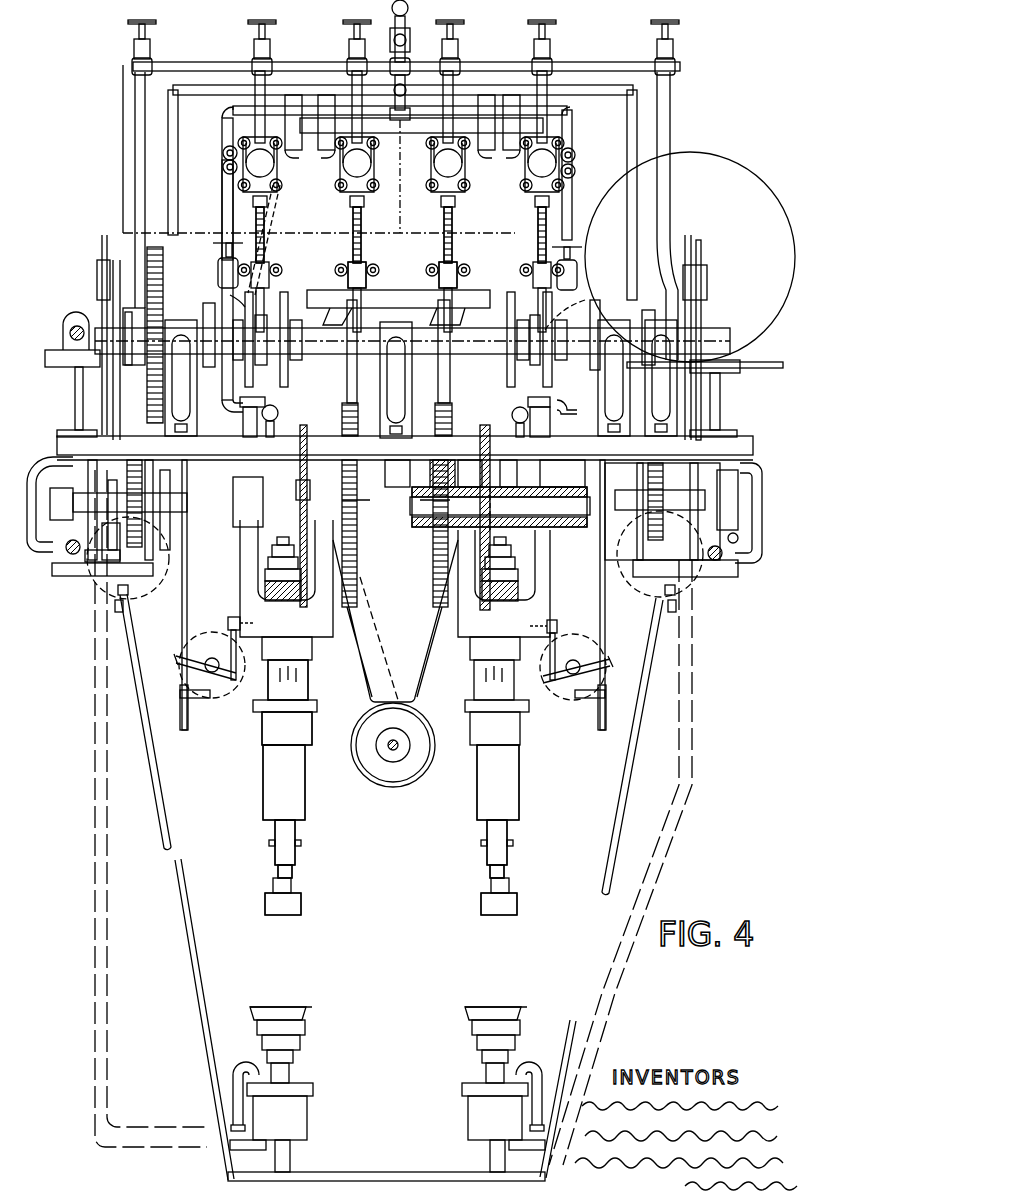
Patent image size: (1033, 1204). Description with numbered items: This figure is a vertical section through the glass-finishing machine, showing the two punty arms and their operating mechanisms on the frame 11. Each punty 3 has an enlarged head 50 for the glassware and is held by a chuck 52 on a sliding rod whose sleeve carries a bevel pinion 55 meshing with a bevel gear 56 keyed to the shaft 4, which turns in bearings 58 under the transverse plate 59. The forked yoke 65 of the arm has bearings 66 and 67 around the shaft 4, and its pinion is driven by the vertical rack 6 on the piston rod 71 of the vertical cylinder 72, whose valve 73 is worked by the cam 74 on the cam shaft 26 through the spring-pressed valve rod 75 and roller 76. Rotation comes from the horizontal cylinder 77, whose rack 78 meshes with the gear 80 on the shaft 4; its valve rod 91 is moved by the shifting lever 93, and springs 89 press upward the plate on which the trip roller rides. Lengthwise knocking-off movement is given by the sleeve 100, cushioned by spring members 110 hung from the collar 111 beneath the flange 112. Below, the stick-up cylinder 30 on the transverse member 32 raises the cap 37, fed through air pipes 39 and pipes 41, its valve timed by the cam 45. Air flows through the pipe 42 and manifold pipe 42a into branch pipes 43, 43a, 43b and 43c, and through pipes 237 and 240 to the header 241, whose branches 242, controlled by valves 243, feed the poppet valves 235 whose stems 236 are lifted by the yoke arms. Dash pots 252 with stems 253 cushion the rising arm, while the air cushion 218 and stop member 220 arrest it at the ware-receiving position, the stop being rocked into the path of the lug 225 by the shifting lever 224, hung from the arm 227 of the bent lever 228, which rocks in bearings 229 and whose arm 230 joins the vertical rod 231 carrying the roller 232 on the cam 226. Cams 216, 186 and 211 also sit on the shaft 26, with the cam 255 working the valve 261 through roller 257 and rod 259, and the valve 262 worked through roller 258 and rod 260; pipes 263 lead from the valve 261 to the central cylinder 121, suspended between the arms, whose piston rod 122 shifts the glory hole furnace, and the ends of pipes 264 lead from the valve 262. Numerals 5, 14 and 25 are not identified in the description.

The punty 3 is at (292, 866).
The shaft 4 is at (210, 508).
The rack gear 5 is at (375, 490).
The vertical punty-operating rack 6 is at (358, 432).
The frame 11 is at (75, 409).
The drum 14 is at (770, 207).
The rack 25 is at (147, 252).
The cam shaft 26 is at (336, 346).
The compressed air cylinder 30 is at (300, 1110).
The transverse member 32 is at (378, 1178).
The cap or die 37 is at (305, 1027).
The air pipes 39 is at (240, 1070).
The pipes 41 is at (95, 777).
The pipe 42 is at (392, 8).
The manifold pipe 42a is at (205, 62).
The branch pipe 43 is at (135, 146).
The branch pipe 43a is at (226, 112).
The branch pipe 43b is at (348, 69).
The branch pipe 43c is at (540, 70).
The cam 45 is at (152, 380).
The enlarged head 50 is at (270, 902).
The chuck 52 is at (275, 827).
The bevel pinion 55 is at (265, 590).
The bevel gear 56 is at (308, 417).
The bearings 58 is at (375, 472).
The transverse plate 59 is at (405, 425).
The forked yoke 65 is at (250, 541).
The bearing 66 is at (456, 470).
The bearing 67 is at (505, 522).
The piston rod 71 is at (363, 390).
The vertical compressed air cylinder 72 is at (322, 180).
The valve 73 is at (340, 188).
The cam 74 is at (441, 346).
The spring-pressed valve rod 75 is at (361, 219).
The roller 76 is at (347, 278).
The horizontal compressed air cylinder 77 is at (130, 592).
The horizontal rack 78 is at (125, 612).
The gear 80 is at (150, 575).
The springs 89 is at (118, 612).
The valve rod 91 is at (72, 556).
The shifting lever 93 is at (85, 578).
The sleeve 100 is at (263, 784).
The spring members 110 is at (262, 716).
The collar 111 is at (288, 676).
The flange 112 is at (290, 745).
The compressed air cylinder 121 is at (378, 753).
The piston rod 122 is at (393, 752).
The cam 186 is at (238, 320).
The cam 211 is at (288, 318).
The cam 216 is at (208, 367).
The air cushion 218 is at (215, 698).
The stop member 220 is at (188, 730).
The shifting lever 224 is at (187, 598).
The lug 225 is at (395, 645).
The cam 226 is at (113, 305).
The arm 227 is at (200, 463).
The bent lever 228 is at (145, 520).
The bearings 229 is at (45, 460).
The arm 230 is at (115, 466).
The vertical rod 231 is at (100, 384).
The cam roller 232 is at (97, 278).
The poppet valves 235 is at (245, 397).
The stem 236 is at (558, 460).
The pipe 237 is at (410, 36).
The pipe 240 is at (222, 220).
The header 241 is at (268, 106).
The branches 242 is at (224, 404).
The valves 243 is at (218, 277).
The air cushions 252 is at (292, 375).
The stems 253 is at (300, 520).
The cam 255 is at (268, 290).
The cam roller 257 is at (230, 295).
The cam roller 258 is at (580, 275).
The spring-pressed valve rod 259 is at (264, 219).
The spring-pressed valve rod 260 is at (538, 222).
The air valve 261 is at (228, 180).
The air valve 262 is at (571, 140).
The pipes 263 is at (375, 645).
The pipes 264 is at (576, 168).